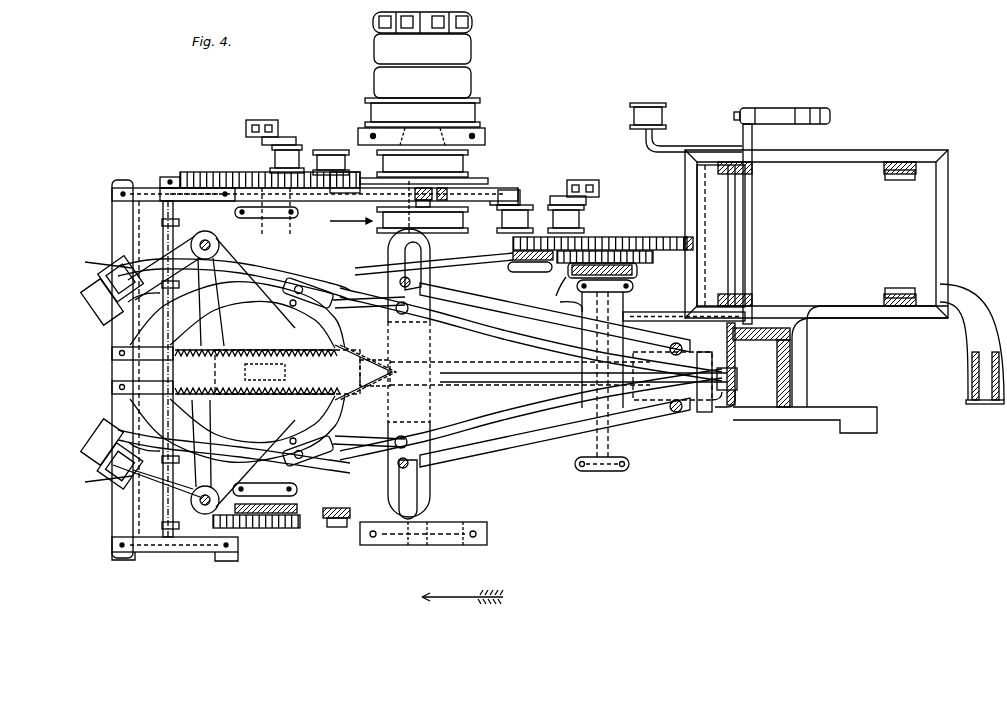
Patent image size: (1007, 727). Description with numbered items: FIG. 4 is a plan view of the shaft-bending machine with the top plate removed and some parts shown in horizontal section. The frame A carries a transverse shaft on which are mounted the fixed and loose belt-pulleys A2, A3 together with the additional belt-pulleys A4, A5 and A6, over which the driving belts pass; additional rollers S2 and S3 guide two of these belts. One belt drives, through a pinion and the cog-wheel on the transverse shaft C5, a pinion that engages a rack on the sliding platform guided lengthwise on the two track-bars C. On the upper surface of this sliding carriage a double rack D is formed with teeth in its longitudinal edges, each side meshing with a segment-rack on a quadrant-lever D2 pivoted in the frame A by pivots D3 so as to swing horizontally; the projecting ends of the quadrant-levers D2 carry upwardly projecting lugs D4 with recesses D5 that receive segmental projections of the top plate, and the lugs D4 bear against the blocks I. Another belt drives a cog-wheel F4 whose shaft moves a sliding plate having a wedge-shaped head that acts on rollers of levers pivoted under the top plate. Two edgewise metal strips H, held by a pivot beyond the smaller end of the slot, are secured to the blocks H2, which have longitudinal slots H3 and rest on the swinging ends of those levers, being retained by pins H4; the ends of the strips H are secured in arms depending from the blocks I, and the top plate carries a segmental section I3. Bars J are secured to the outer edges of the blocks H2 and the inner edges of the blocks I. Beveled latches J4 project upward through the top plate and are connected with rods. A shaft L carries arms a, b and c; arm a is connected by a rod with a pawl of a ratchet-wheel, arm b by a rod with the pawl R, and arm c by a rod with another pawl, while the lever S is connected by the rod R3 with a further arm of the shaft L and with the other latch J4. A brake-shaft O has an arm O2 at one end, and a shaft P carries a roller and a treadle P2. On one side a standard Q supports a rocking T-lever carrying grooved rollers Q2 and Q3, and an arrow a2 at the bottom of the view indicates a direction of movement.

The frame A is at (112, 376).
The fixed belt-pulley A2 is at (422, 82).
The loose belt-pulley A3 is at (422, 38).
The belt-pulley A4 is at (470, 114).
The belt-pulley A5 is at (447, 162).
The belt-pulley A6 is at (422, 220).
The arm a is at (162, 223).
The direction arrow a2 is at (462, 589).
The arm b is at (176, 320).
The arm c is at (162, 524).
The track-bars C is at (142, 370).
The transverse shaft C5 is at (278, 209).
The double rack D is at (267, 372).
The quadrant-lever D2 is at (166, 461).
The pivots D3 is at (182, 284).
The lugs D4 is at (100, 280).
The recesses D5 is at (103, 376).
The cog-wheel F4 is at (672, 245).
The metal strips H is at (480, 343).
The blocks H2 is at (369, 361).
The longitudinal slots H3 is at (318, 343).
The pins H4 is at (293, 290).
The blocks I is at (215, 366).
The segmental section I3 is at (104, 362).
The metal strips J is at (233, 372).
The beveled latch J4 is at (333, 362).
The shaft L is at (144, 372).
The brake-shaft O is at (748, 250).
The arm O2 is at (666, 312).
The shaft P is at (730, 232).
The treadle P2 is at (812, 412).
The standard Q is at (488, 181).
The grooved roller Q2 is at (331, 162).
The grooved roller Q3 is at (515, 211).
The pawl R is at (512, 247).
The rod R3 is at (579, 455).
The lever S is at (738, 370).
The roller S2 is at (573, 206).
The roller S3 is at (275, 146).